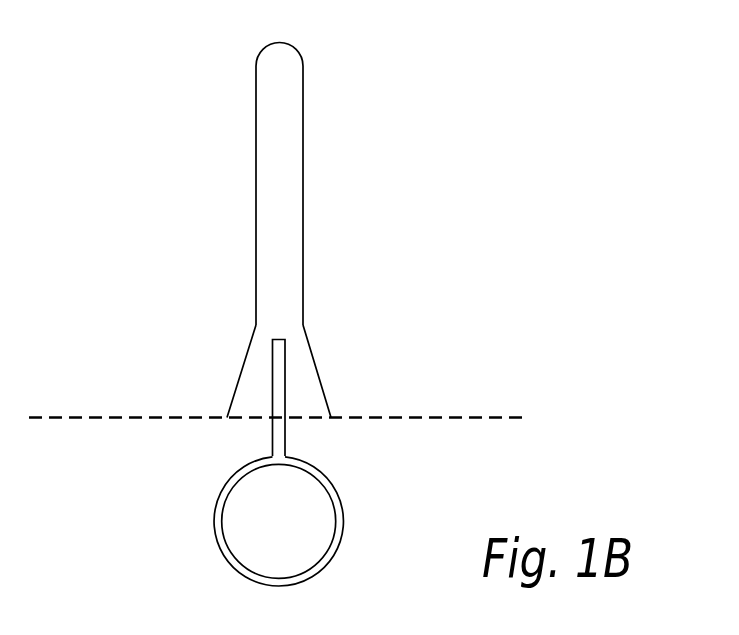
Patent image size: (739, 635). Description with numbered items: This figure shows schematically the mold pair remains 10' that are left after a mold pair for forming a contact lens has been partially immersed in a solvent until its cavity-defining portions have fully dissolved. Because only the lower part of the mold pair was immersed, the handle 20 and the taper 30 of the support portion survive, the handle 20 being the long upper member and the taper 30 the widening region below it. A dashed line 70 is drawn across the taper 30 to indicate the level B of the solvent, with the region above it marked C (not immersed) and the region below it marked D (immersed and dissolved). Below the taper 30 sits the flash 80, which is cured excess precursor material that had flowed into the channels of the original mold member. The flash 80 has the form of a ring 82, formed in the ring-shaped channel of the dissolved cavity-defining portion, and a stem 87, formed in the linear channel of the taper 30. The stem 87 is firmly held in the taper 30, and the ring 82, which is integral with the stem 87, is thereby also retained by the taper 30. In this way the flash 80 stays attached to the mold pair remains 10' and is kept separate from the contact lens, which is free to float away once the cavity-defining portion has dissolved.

The mold pair remains 10' is at (239, 173).
The handle 20 is at (247, 61).
The taper 30 is at (255, 382).
The stem 87 is at (272, 431).
The flash 80 is at (283, 521).
The ring 82 is at (220, 550).
The tissue plane / boundary line 70 is at (115, 420).
The direction C is at (309, 151).
The direction D is at (289, 386).
The plane B is at (406, 421).